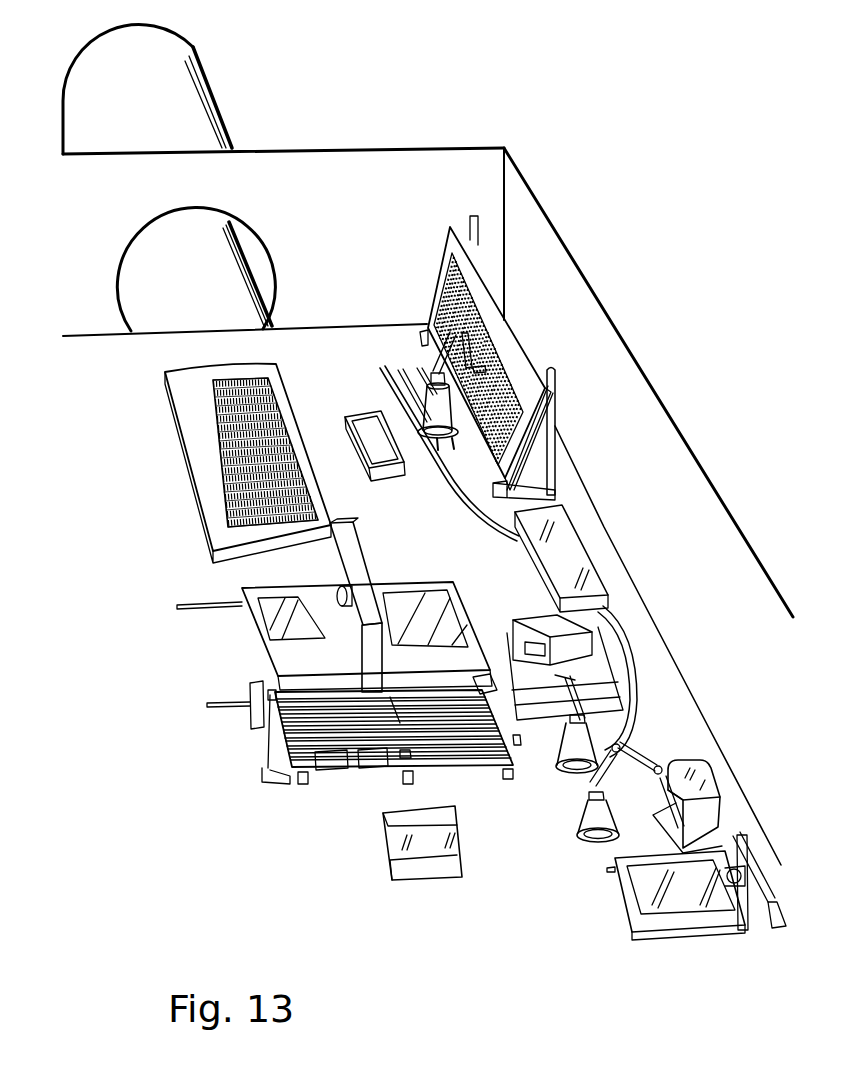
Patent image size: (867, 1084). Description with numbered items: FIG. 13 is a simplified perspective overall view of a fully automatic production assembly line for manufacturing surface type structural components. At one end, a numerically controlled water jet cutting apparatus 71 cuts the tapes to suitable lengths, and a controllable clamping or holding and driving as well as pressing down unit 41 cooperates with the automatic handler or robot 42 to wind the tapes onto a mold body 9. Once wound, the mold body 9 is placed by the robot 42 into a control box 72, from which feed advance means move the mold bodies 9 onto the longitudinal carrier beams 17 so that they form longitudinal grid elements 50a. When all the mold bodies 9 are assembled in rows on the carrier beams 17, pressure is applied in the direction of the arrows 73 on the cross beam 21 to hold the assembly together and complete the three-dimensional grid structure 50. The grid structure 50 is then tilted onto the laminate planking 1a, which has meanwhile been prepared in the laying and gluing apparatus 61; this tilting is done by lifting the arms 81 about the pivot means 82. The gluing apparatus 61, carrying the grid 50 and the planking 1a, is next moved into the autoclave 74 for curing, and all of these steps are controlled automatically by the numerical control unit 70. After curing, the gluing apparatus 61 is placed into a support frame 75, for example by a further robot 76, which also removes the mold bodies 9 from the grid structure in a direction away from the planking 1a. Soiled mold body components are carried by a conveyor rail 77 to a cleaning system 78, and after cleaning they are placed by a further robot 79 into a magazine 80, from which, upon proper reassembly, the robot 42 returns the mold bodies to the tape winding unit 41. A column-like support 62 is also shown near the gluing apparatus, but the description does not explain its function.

The laminate planking 1a is at (277, 613).
The mold body 9 is at (313, 760).
The longitudinal carrier beams 17 is at (517, 740).
The cross beam 21 is at (407, 752).
The clamping or holding and driving as well as pressing down unit 41 is at (697, 780).
The robot 42 is at (592, 817).
The grid structure 50 is at (263, 418).
The longitudinal grid elements 50a is at (282, 727).
The laying and gluing apparatus 61 is at (208, 480).
The column 62 is at (343, 531).
The numerical control unit 70 is at (442, 870).
The water jet cutting apparatus 71 is at (645, 890).
The control box 72 is at (398, 763).
The arrows 73 is at (400, 724).
The autoclave 74 is at (228, 267).
The support frame 75 is at (555, 418).
The further robot 76 is at (437, 417).
The conveyor rail 77 is at (440, 503).
The cleaning system 78 is at (577, 550).
The further robot 79 is at (565, 753).
The magazine 80 is at (603, 690).
The arms 81 is at (277, 732).
The pivot means 82 is at (255, 690).